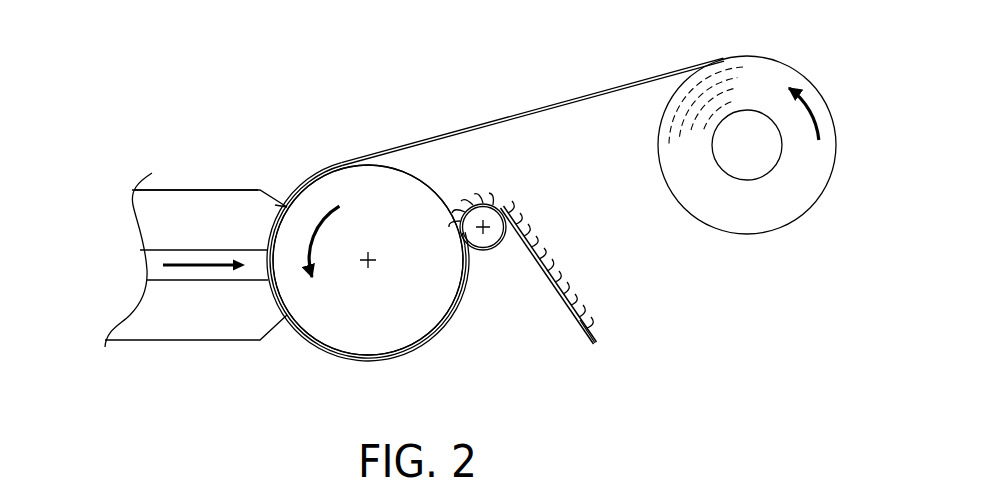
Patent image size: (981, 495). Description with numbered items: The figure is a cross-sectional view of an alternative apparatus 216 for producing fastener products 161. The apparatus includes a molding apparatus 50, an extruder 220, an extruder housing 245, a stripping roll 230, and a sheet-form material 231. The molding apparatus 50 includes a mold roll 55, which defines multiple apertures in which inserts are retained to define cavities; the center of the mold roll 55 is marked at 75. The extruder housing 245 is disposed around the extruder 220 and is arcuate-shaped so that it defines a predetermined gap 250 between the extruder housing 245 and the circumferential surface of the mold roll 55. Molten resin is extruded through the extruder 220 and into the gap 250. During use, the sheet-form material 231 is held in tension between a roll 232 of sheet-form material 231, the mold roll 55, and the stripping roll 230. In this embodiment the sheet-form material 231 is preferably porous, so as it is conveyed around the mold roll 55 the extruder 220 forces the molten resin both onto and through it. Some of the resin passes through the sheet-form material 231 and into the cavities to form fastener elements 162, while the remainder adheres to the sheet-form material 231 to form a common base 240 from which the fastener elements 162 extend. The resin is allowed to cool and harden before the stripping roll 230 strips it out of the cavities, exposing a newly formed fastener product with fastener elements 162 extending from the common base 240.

The alternative apparatus 216 is at (175, 149).
The extruder housing 245 is at (213, 189).
The gap 250 is at (286, 188).
The extruder 220 is at (160, 260).
The molding apparatus 50 is at (467, 303).
The mold roll 55 is at (382, 325).
The drum axis 75 is at (365, 270).
The sheet-form material 231 is at (502, 128).
The roll of sheet-form material 232 is at (750, 213).
The stripping roll 230 is at (499, 244).
The common base 240 is at (567, 303).
The fastener products 161 is at (584, 343).
The fastener elements 162 is at (563, 280).